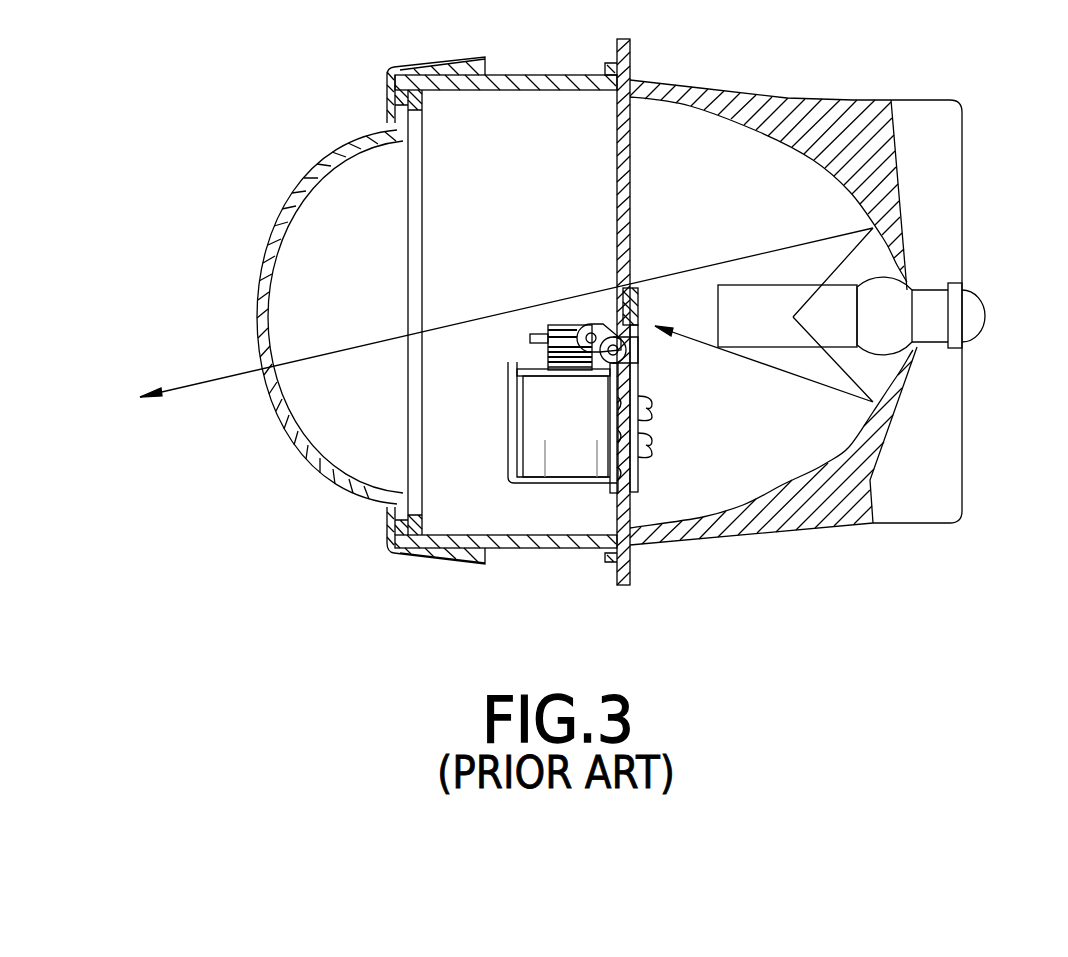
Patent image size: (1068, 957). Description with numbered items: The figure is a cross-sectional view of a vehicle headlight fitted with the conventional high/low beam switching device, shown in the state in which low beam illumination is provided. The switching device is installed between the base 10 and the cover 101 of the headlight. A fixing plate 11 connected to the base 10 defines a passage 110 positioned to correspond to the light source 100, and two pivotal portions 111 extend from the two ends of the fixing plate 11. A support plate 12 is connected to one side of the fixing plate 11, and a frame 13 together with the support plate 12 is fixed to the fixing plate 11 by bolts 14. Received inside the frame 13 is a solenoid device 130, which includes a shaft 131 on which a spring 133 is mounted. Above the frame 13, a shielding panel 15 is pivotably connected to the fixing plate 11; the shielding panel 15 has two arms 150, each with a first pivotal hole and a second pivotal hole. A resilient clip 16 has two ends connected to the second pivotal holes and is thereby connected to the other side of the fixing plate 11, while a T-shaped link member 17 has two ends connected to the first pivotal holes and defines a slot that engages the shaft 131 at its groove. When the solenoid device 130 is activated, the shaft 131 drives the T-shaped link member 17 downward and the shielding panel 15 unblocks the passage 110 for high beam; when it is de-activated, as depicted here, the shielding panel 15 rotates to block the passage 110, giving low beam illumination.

The base 10 is at (807, 98).
The light source 100 is at (837, 295).
The cover 101 is at (268, 267).
The passage 110 is at (636, 288).
The fixing plate 11 is at (637, 483).
The pivotal portions 111 is at (607, 385).
The support plate 12 is at (645, 462).
The frame 13 is at (540, 465).
The solenoid device 130 is at (542, 465).
The shaft 131 is at (545, 325).
The spring 133 is at (548, 358).
The bolts 14 is at (642, 437).
The shielding panel 15 is at (657, 327).
The arms 150 is at (510, 366).
The resilient clip 16 is at (612, 495).
The T-shaped link member 17 is at (530, 338).